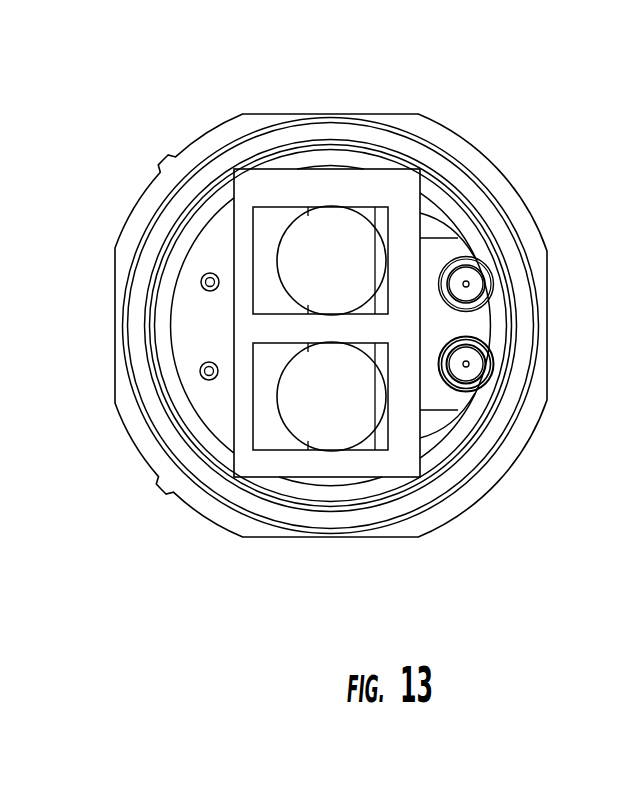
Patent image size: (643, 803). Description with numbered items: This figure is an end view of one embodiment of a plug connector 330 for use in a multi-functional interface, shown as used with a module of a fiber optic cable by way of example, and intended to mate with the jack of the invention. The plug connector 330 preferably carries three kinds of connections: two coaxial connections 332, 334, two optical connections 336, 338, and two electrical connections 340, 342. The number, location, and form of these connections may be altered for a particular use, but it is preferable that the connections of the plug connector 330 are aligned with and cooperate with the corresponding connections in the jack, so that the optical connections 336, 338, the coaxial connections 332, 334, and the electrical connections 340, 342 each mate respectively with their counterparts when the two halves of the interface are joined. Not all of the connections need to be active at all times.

The plug connector 330 is at (518, 158).
The coaxial connection 332 is at (492, 284).
The coaxial connection 334 is at (492, 364).
The optical connection 336 is at (346, 206).
The optical connection 338 is at (353, 435).
The electrical connection 340 is at (200, 282).
The electrical connection 342 is at (207, 381).